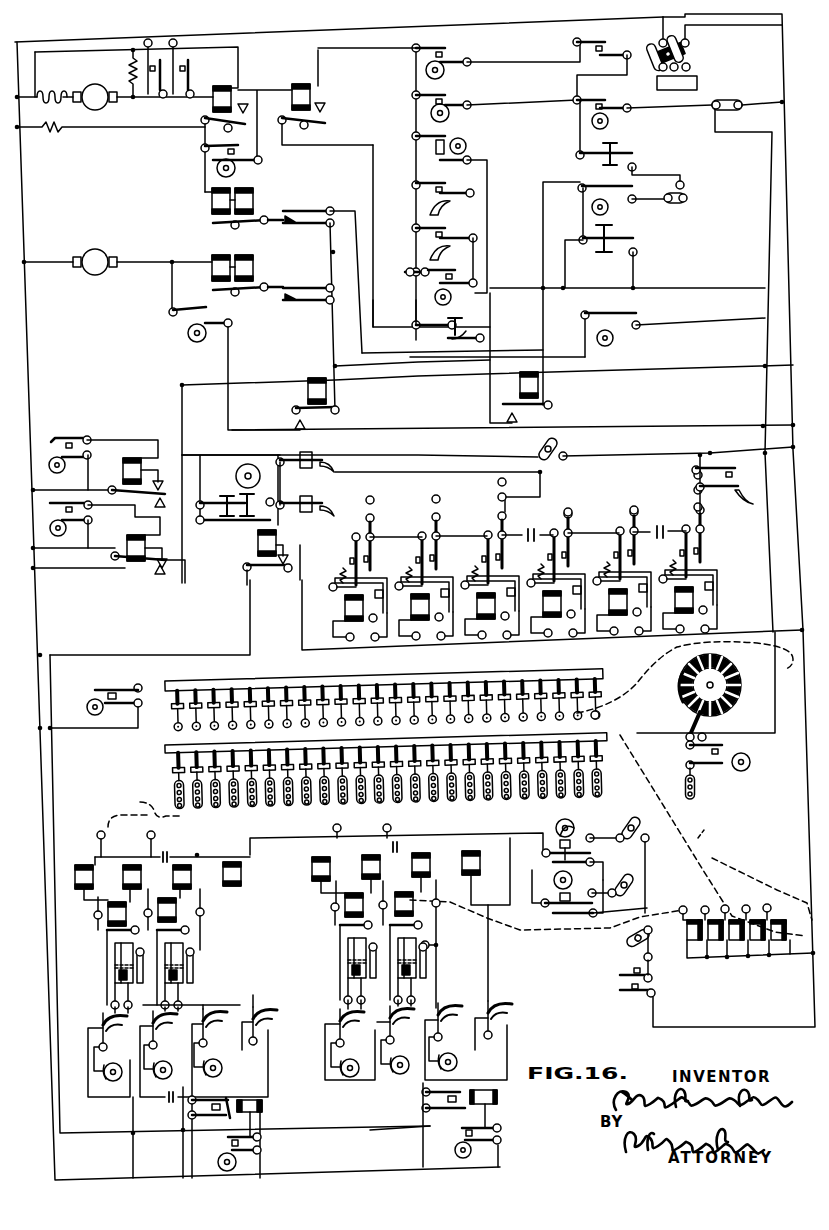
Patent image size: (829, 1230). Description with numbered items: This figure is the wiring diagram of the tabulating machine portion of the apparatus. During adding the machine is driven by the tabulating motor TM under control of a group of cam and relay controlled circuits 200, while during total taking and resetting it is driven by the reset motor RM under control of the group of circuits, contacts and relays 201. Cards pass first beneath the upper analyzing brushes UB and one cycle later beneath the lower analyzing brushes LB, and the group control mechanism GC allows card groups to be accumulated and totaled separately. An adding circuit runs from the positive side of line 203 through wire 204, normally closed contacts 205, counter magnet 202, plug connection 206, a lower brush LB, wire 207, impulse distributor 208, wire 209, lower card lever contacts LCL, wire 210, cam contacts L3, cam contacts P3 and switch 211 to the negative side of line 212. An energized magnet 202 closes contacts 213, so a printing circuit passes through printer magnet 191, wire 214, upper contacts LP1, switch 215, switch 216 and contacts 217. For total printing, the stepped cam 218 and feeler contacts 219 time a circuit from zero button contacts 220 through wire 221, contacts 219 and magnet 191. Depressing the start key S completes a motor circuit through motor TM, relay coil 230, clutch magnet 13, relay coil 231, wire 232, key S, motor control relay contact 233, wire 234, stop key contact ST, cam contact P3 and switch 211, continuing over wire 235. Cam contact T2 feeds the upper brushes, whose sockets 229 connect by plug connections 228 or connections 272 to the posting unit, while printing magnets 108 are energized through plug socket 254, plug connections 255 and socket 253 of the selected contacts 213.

The clutch magnet 13 is at (255, 200).
The printing magnet 108 is at (752, 940).
The printer magnet 191 is at (136, 841).
The cam and relay controlled circuits 200 is at (369, 81).
The group of circuits, contacts and relays 201 is at (481, 340).
The counter magnet 202 is at (170, 905).
The positive side of line 203 is at (505, 18).
The wire 204 is at (133, 1152).
The normally closed contacts 205 is at (120, 976).
The plug connection 206 is at (142, 810).
The wire 207 is at (635, 732).
The impulse distributor 208 is at (738, 700).
The wire 209 is at (770, 548).
The wire 210 is at (422, 168).
The switch 211 is at (713, 56).
The negative side of line 212 is at (782, 42).
The contacts 213 is at (190, 1000).
The wire 214 is at (205, 857).
The switch 215 is at (647, 864).
The switch 216 is at (652, 952).
The contacts 217 is at (655, 993).
The stepped cam 218 is at (112, 1080).
The contacts 219 is at (110, 1011).
The zero button contacts 220 is at (235, 1136).
The wire 221 is at (188, 1040).
The plug connection 228 is at (703, 832).
The plug socket 229 is at (600, 712).
The relay coil 230 is at (232, 95).
The relay coil 231 is at (310, 92).
The wire 232 is at (373, 165).
The motor control relay contact 233 is at (538, 413).
The wire 234 is at (552, 214).
The wire 235 is at (773, 195).
The plug socket 253 is at (203, 915).
The plug socket 254 is at (686, 906).
The plug connection 255 is at (560, 927).
The connection 272 is at (727, 642).
The tabulating motor TM is at (97, 102).
The reset motor RM is at (103, 250).
The cam contacts L3 is at (448, 100).
The cam contacts P3 is at (603, 98).
The stop key contact ST is at (616, 160).
The lower card lever contacts LCL is at (466, 222).
The start key S is at (450, 327).
The group control mechanism GC is at (493, 536).
The cam contact T2 is at (118, 690).
The upper analyzing brushes UB is at (542, 686).
The lower analyzing brushes LB is at (178, 766).
The contacts LP1 is at (575, 838).